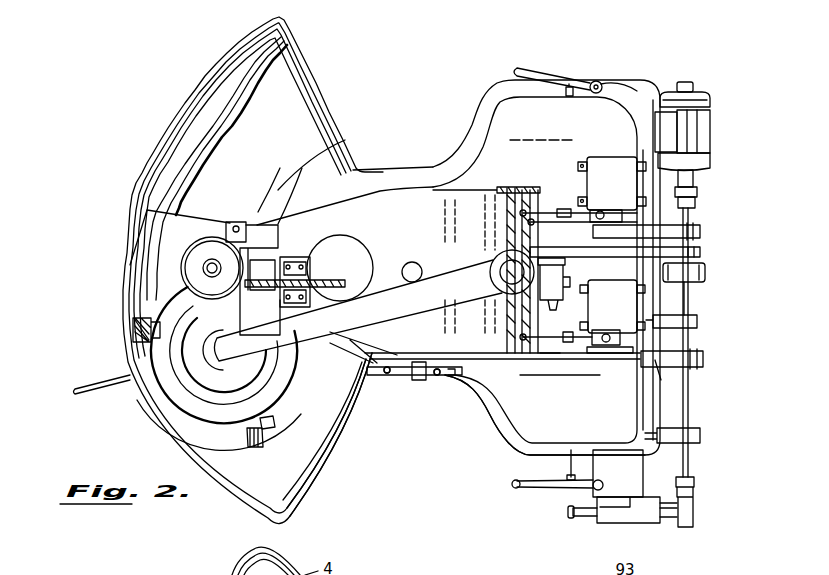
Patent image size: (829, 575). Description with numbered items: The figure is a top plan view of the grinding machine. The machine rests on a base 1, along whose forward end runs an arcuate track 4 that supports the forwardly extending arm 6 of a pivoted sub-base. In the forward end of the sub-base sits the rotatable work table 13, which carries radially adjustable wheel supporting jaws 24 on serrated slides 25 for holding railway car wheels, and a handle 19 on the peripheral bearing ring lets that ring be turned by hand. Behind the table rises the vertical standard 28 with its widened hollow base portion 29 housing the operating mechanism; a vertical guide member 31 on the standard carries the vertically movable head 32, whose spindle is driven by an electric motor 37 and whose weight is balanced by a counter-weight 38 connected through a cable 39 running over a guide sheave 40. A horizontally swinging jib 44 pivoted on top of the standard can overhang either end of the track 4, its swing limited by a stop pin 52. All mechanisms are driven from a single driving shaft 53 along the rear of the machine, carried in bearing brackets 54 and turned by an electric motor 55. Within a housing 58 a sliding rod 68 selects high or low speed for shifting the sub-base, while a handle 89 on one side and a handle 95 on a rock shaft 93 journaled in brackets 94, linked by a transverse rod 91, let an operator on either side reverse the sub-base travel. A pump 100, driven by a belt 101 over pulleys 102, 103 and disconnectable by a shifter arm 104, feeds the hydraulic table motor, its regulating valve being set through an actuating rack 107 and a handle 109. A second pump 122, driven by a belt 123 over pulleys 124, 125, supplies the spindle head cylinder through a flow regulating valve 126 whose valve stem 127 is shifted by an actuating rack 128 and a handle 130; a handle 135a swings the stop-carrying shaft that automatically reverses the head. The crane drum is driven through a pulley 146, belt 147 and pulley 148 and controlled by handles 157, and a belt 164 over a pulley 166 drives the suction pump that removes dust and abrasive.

The base 1 is at (360, 377).
The arcuate track 4 is at (280, 58).
The forwardly extending arm 6 is at (300, 470).
The table 13 is at (152, 405).
The handle 19 is at (96, 384).
The wheel supporting jaws 24 is at (266, 434).
The radial serrated slides 25 is at (238, 442).
The vertical standard 28 is at (540, 388).
The hollow base portion 29 is at (510, 425).
The vertical guide member 31 is at (258, 243).
The head 32 is at (219, 223).
The electric motor 37 is at (198, 252).
The counter-weight 38 is at (330, 287).
The cable 39 is at (300, 265).
The guide sheave 40 is at (298, 277).
The jib 44 is at (383, 297).
The stop pin 52 is at (420, 266).
The driving shaft 53 is at (700, 463).
The bearing brackets 54 is at (702, 208).
The electric motor 55 is at (712, 140).
The housing 58 is at (650, 520).
The rod 68 is at (583, 517).
The handle 89 is at (545, 490).
The rod 91 is at (566, 97).
The vertical rock shaft 93 is at (598, 82).
The brackets 94 is at (612, 92).
The handle 95 is at (553, 75).
The pump 100 is at (598, 313).
The belt 101 is at (662, 372).
The pulley 102 is at (598, 363).
The pulley 103 is at (706, 364).
The shifter arm 104 is at (545, 356).
The actuating rack 107 is at (533, 378).
The handle 109 is at (436, 373).
The pump 122 is at (610, 165).
The belt 123 is at (703, 228).
The pulley 124 is at (600, 241).
The pulley 125 is at (700, 251).
The flow regulating valve 126 is at (594, 213).
The valve stem 127 is at (578, 215).
The actuating rack 128 is at (528, 192).
The handle 130 is at (388, 372).
The handle 135a is at (198, 306).
The pulley 146 is at (577, 264).
The belt 147 is at (612, 306).
The pulley 148 is at (707, 268).
The handles 157 is at (420, 367).
The belt 164 is at (706, 280).
The pulley 166 is at (708, 290).